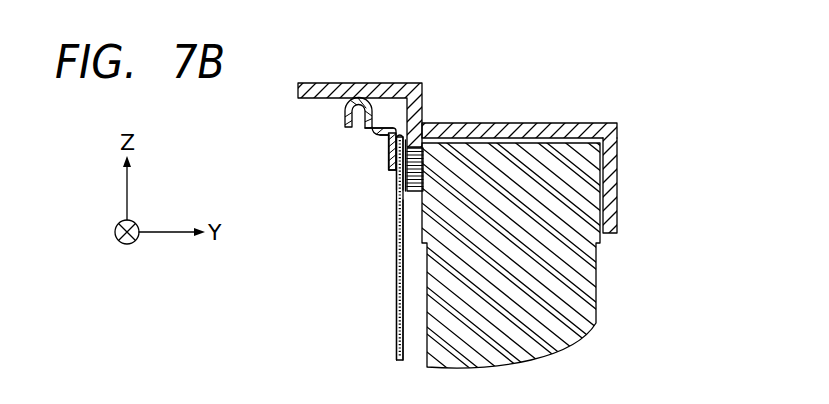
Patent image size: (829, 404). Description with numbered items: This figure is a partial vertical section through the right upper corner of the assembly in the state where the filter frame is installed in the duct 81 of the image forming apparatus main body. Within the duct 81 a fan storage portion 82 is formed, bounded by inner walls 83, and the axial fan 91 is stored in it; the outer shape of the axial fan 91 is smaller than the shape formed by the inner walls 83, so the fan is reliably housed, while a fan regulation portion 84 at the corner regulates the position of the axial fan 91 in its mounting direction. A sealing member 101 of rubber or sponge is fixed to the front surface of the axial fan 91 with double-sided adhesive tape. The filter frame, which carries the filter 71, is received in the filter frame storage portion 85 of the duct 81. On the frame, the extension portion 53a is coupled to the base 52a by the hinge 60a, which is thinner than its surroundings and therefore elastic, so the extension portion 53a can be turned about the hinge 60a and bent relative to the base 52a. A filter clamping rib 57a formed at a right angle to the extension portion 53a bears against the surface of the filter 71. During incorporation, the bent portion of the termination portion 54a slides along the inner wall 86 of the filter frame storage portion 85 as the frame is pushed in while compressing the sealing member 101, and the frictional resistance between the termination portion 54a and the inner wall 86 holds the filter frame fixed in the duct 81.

The termination portion 54a is at (358, 99).
The extension portion 53a is at (377, 131).
The hinge 60a is at (401, 140).
The base 52a is at (404, 152).
The sealing member 101 is at (423, 164).
The duct 81 is at (515, 202).
The inner wall 83 is at (590, 124).
The fan regulation portion 84 is at (618, 165).
The fan storage portion 82 is at (582, 265).
The axial fan 91 is at (575, 297).
The inner wall 86 is at (313, 99).
The filter clamping rib 57a is at (388, 152).
The filter frame storage portion 85 is at (378, 208).
The filter 71 is at (390, 287).